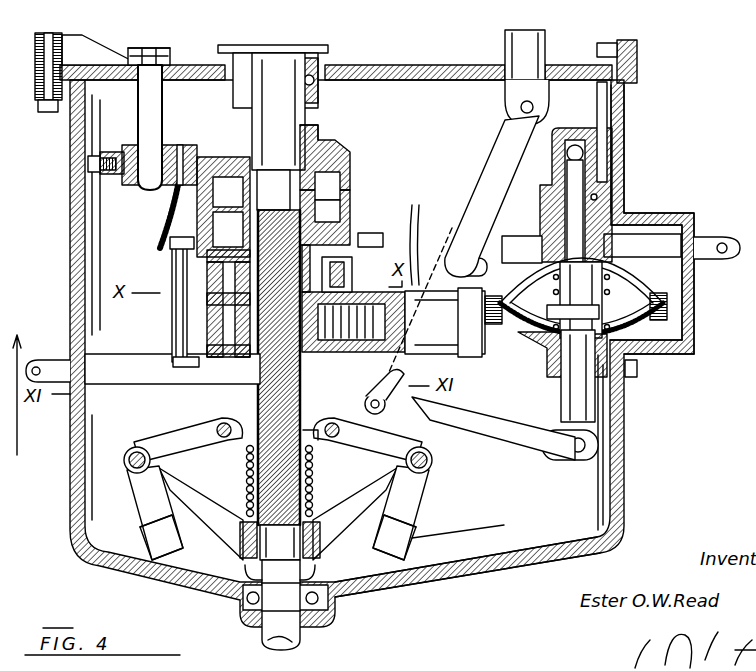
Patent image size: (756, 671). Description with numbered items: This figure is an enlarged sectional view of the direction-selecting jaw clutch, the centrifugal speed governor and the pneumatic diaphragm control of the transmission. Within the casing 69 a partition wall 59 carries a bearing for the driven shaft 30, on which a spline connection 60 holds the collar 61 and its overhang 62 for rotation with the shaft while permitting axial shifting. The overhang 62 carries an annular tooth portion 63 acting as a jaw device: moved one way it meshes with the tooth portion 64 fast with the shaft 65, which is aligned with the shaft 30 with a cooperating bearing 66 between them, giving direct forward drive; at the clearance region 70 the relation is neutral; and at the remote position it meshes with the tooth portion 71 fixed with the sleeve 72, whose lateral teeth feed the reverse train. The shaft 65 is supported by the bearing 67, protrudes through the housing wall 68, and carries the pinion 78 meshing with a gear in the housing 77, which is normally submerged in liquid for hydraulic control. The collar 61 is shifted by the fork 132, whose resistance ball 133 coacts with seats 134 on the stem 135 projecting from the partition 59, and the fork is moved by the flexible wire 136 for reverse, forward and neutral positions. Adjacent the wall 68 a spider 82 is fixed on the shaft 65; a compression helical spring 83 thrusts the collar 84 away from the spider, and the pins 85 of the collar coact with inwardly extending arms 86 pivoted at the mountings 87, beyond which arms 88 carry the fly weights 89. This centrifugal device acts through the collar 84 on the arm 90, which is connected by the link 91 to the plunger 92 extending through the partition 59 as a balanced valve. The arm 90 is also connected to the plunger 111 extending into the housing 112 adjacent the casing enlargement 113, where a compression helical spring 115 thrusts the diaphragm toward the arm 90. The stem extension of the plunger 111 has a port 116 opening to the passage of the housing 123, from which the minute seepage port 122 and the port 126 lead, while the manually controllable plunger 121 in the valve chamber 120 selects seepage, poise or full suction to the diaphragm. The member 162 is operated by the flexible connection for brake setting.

The driven shaft 30 is at (300, 102).
The partition wall 59 is at (392, 80).
The spline connection 60 is at (255, 108).
The collar 61 is at (318, 135).
The overhang 62 is at (352, 185).
The annular tooth portion 63 is at (352, 208).
The tooth portion 64 is at (345, 195).
The shaft 65 is at (240, 388).
The bearing 66 is at (340, 160).
The bearing 67 is at (335, 603).
The housing wall 68 is at (405, 590).
The casing 69 is at (628, 452).
The clearance region 70 is at (165, 230).
The tooth portion 71 is at (395, 222).
The sleeve 72 is at (172, 262).
The housing 77 is at (448, 270).
The pinion 78 is at (185, 350).
The spider 82 is at (324, 555).
The compression helical spring 83 is at (316, 490).
The collar 84 is at (320, 445).
The pins 85 is at (215, 432).
The arms 86 is at (190, 452).
The pivotal mountings 87 is at (135, 474).
The arms 88 is at (172, 500).
The fly weights 89 is at (150, 538).
The arm 90 is at (493, 417).
The link 91 is at (495, 152).
The plunger 92 is at (545, 78).
The plunger 111 is at (560, 405).
The housing 112 is at (530, 338).
The casing enlargement 113 is at (696, 350).
The compression helical spring 115 is at (598, 298).
The port 116 is at (535, 242).
The valve 120 is at (660, 215).
The manually controllable plunger 121 is at (708, 237).
The seepage port 122 is at (622, 180).
The housing 123 is at (540, 205).
The port 126 is at (552, 165).
The fork 132 is at (208, 140).
The resistance ball 133 is at (135, 190).
The seats 134 is at (137, 135).
The stem 135 is at (165, 95).
The flexible wire 136 is at (160, 220).
The member 162 is at (60, 365).